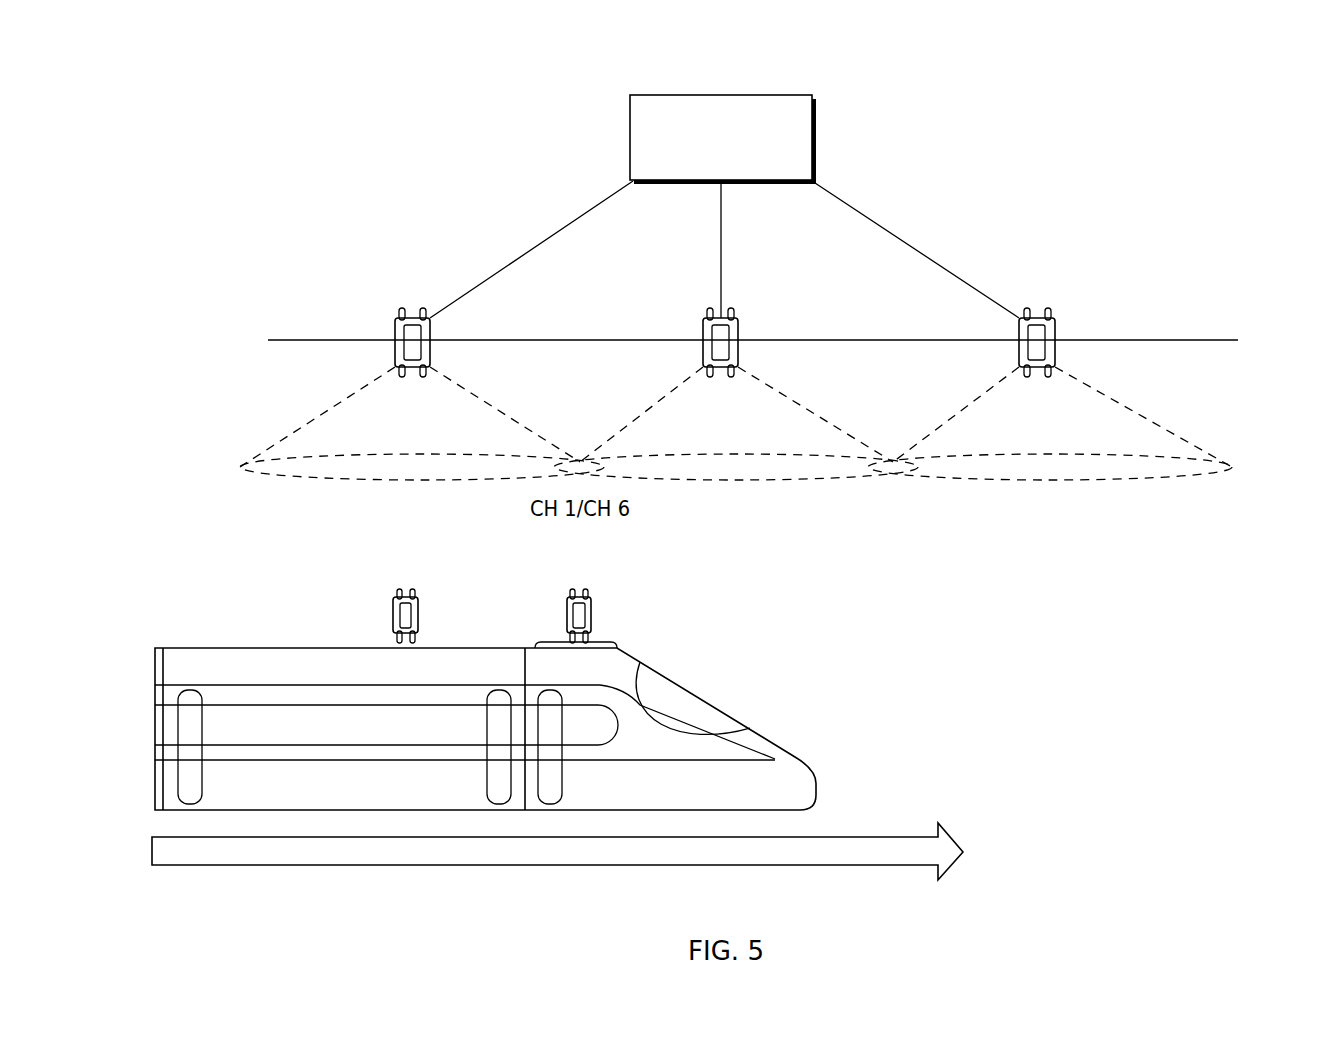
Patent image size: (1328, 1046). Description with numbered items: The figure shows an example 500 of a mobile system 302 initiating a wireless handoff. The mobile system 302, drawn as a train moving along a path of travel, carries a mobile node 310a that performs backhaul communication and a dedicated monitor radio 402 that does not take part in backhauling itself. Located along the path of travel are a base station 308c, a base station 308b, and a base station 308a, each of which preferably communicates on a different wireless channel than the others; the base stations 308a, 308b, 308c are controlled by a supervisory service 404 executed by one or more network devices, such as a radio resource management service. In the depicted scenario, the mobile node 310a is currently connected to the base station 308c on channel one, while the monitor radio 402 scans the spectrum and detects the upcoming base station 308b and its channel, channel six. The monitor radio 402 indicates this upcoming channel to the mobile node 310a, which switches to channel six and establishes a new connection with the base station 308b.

The example 500 is at (1213, 83).
The supervisory service 404 is at (812, 137).
The base station 308a is at (1055, 330).
The base station 308b is at (703, 330).
The base station 308c is at (395, 330).
The mobile system 302 is at (790, 752).
The mobile node 310a is at (393, 620).
The monitor radio 402 is at (591, 612).